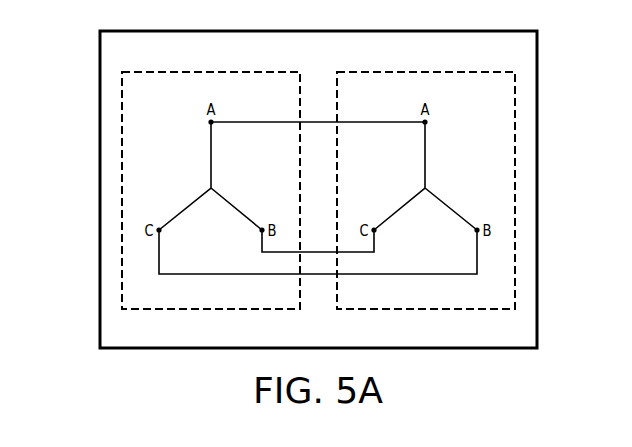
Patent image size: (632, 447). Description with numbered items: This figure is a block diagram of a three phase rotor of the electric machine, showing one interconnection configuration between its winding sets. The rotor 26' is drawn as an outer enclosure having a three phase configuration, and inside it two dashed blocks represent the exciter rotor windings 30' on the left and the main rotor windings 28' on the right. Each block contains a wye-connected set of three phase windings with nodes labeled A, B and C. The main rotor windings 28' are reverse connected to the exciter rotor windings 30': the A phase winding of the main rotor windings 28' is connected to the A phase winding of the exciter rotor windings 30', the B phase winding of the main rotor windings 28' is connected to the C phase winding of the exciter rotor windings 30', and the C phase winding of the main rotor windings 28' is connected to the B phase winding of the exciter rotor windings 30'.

The rotor 26' is at (349, 189).
The main rotor windings 28' is at (461, 190).
The exciter rotor windings 30' is at (176, 190).